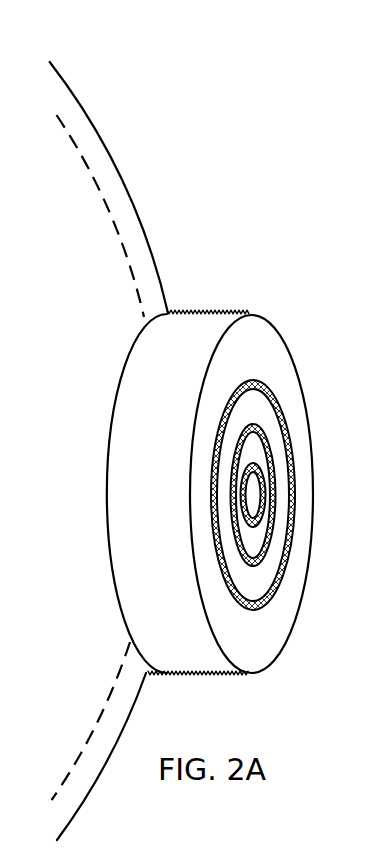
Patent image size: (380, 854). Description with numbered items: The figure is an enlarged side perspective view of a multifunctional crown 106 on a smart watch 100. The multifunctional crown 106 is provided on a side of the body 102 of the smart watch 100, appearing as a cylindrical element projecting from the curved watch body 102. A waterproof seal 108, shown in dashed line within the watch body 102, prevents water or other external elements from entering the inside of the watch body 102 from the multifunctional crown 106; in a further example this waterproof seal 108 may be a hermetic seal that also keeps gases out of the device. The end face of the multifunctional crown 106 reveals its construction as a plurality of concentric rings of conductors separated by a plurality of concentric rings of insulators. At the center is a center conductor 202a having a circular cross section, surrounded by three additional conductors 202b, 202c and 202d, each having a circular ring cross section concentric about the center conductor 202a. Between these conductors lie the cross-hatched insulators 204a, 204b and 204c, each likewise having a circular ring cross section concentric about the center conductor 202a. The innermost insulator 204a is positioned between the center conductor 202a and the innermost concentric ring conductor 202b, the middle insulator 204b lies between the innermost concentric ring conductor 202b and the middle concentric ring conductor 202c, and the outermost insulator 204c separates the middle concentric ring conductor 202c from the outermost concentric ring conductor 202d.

The smart watch 100 is at (149, 106).
The body 102 is at (116, 187).
The waterproof seal 108 is at (130, 246).
The multifunctional crown 106 is at (208, 304).
The center conductor 202a is at (253, 485).
The innermost concentric ring conductor 202b is at (257, 448).
The middle concentric ring conductor 202c is at (257, 410).
The outermost concentric ring conductor 202d is at (270, 372).
The innermost insulator 204a is at (264, 496).
The middle insulator 204b is at (276, 537).
The outermost insulator 204c is at (283, 573).